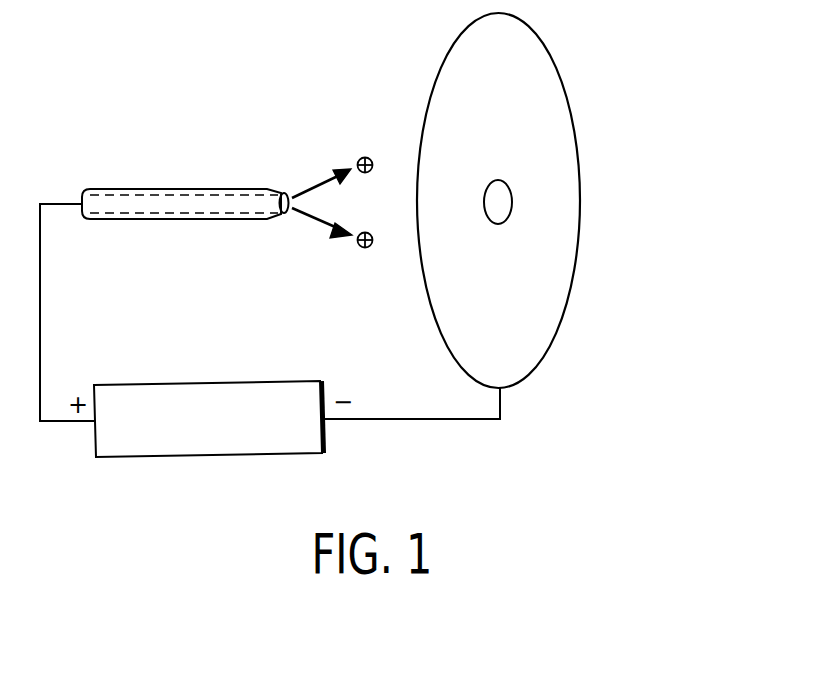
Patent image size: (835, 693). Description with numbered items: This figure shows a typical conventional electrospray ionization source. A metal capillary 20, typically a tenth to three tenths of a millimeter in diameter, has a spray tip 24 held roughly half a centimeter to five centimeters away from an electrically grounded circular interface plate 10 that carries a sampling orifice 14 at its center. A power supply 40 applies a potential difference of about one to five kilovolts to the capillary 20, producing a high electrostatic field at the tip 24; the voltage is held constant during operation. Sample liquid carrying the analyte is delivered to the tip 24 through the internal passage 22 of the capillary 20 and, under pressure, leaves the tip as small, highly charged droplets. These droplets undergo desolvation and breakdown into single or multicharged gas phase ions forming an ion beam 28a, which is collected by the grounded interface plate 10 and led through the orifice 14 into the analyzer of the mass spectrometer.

The interface plate 10 is at (575, 288).
The sampling orifice 14 is at (512, 202).
The metal capillary 20 is at (113, 189).
The capillary bore 22 is at (212, 217).
The capillary tip 24 is at (286, 191).
The ion beam 28a is at (366, 157).
The power supply 40 is at (286, 445).